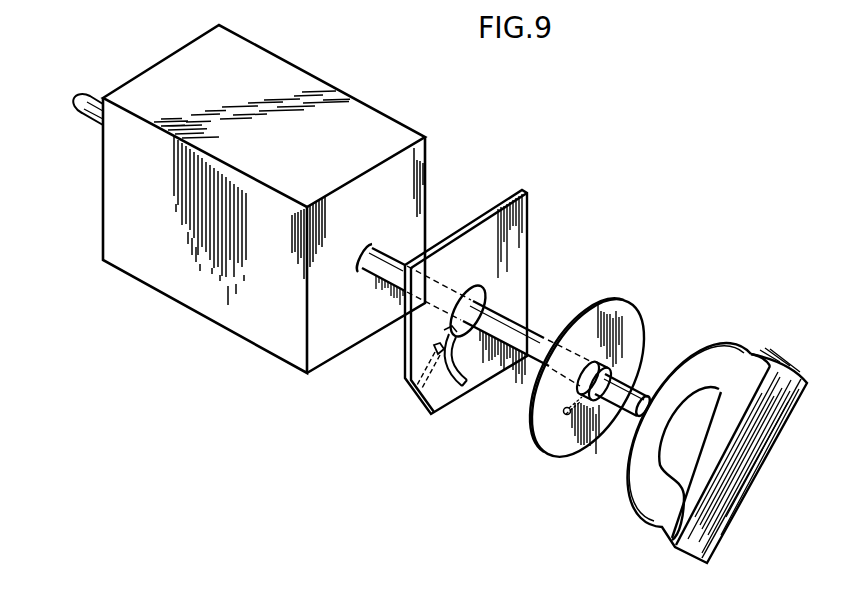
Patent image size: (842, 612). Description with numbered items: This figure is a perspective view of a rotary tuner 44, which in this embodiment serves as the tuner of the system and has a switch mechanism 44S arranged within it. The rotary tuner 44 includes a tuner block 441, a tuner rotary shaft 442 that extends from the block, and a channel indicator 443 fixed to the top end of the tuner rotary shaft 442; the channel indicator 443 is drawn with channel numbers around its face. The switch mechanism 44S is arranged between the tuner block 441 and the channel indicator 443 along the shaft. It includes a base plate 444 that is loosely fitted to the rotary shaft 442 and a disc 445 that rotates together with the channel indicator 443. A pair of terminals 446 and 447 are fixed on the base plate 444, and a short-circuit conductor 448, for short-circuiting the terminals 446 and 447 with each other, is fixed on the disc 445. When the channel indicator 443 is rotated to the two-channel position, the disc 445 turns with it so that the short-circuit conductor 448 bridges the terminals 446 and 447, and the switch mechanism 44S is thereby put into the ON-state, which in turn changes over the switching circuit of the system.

The rotary tuner 44 is at (460, 103).
The switch mechanism 44S is at (516, 430).
The tuner block 441 is at (183, 277).
The tuner rotary shaft 442 is at (373, 280).
The channel indicator 443 is at (625, 490).
The base plate 444 is at (420, 357).
The disc 445 is at (572, 437).
The terminal 446 is at (415, 392).
The terminal 447 is at (462, 388).
The short-circuit conductor 448 is at (545, 428).